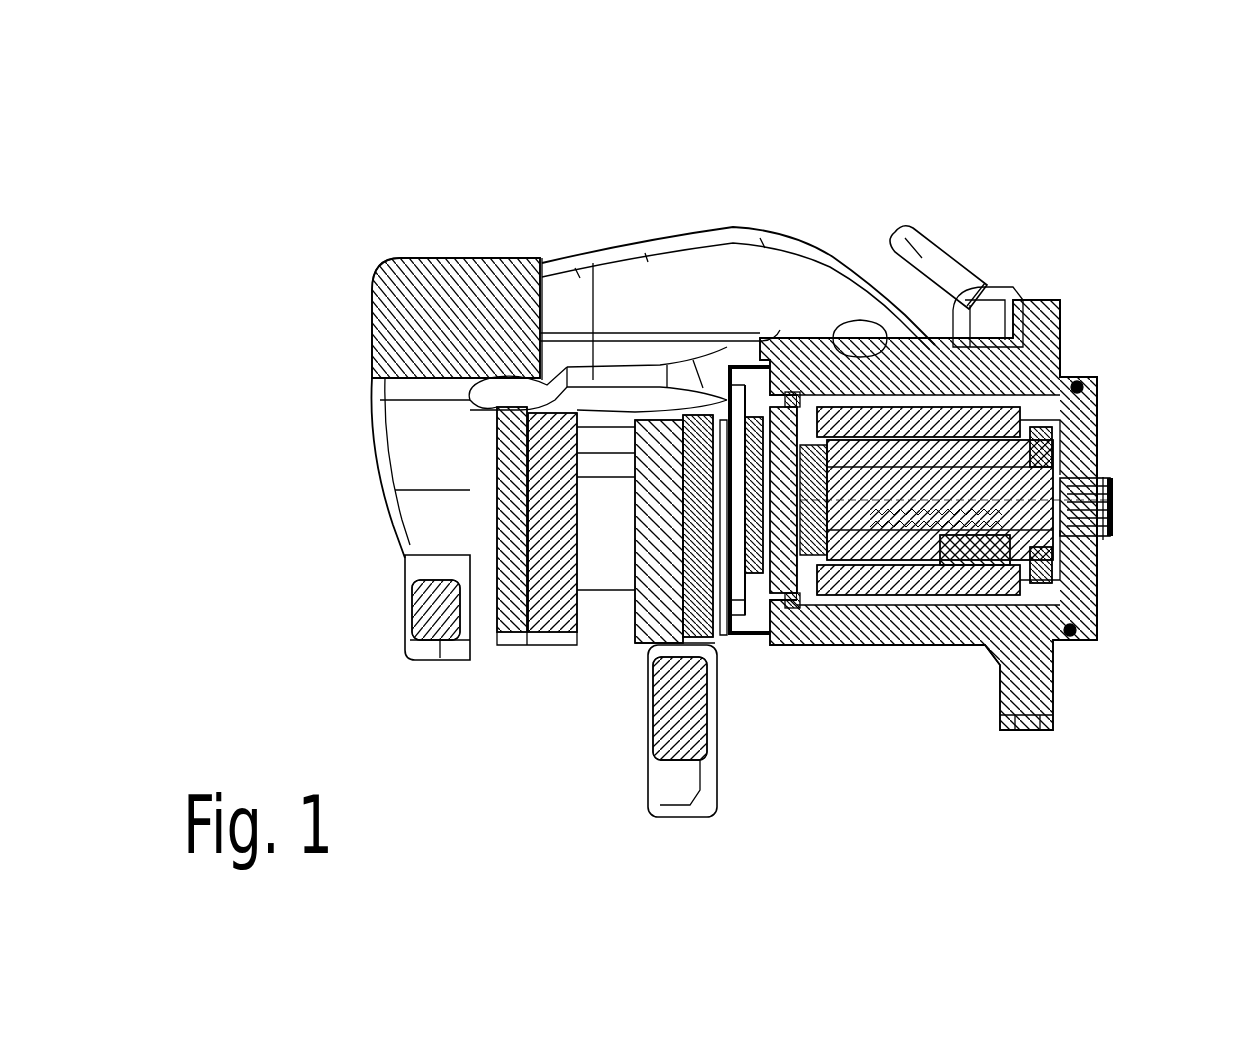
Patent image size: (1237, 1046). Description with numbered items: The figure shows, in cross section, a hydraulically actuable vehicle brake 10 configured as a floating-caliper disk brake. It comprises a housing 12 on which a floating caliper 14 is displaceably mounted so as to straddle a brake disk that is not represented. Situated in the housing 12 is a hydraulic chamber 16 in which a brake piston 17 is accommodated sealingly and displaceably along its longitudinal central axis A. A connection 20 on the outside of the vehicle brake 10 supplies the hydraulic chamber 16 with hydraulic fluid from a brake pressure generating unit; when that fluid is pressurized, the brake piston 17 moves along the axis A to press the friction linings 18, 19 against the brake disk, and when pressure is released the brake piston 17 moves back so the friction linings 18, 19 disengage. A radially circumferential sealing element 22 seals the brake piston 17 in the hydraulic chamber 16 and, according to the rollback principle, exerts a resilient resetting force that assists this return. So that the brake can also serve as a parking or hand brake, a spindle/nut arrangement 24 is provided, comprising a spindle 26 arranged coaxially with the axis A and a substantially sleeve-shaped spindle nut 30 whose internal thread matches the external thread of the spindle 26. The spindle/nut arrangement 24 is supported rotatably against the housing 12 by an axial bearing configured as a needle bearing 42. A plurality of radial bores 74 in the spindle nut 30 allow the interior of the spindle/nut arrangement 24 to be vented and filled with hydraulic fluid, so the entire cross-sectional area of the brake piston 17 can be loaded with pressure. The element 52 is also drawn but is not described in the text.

The vehicle brake 10 is at (410, 166).
The housing 12 is at (1083, 413).
The floating caliper 14 is at (620, 292).
The hydraulic chamber 16 is at (1007, 440).
The brake piston 17 is at (905, 450).
The friction lining 18 is at (650, 607).
The friction lining 19 is at (540, 593).
The connection 20 is at (925, 245).
The sealing element 22 is at (877, 415).
The spindle/nut arrangement 24 is at (953, 347).
The spindle 26 is at (870, 510).
The spindle nut 30 is at (955, 535).
The needle bearing 42 is at (1047, 453).
The spline drive 52 is at (1112, 500).
The radial bores 74 is at (900, 640).
The longitudinal central axis A is at (1060, 527).